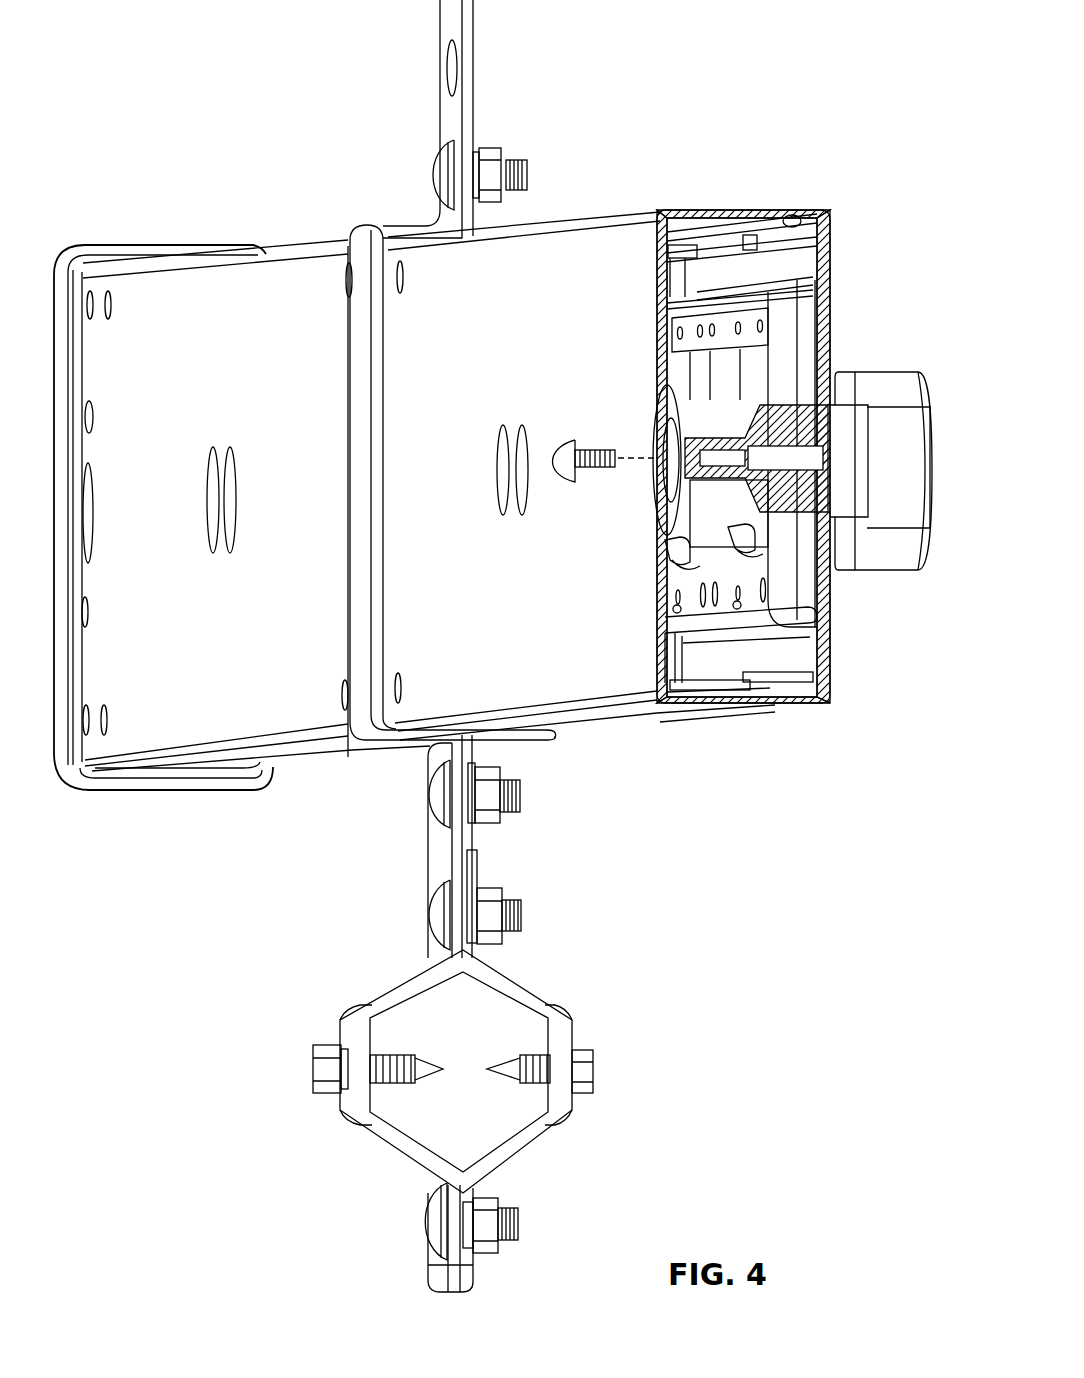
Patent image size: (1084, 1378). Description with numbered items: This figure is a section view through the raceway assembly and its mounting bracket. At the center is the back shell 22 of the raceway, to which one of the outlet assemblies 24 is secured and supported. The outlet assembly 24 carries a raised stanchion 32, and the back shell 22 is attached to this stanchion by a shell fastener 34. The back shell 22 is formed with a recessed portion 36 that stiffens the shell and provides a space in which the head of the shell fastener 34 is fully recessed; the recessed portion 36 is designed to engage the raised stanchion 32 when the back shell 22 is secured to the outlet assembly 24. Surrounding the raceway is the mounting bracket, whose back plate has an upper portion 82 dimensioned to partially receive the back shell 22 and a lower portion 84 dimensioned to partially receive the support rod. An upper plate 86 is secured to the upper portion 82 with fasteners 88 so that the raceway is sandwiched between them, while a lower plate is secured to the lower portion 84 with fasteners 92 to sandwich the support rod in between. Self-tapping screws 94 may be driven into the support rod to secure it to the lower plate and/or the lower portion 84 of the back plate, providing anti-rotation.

The back shell 22 is at (493, 350).
The outlet assembly 24 is at (860, 202).
The raised stanchion 32 is at (714, 432).
The shell fastener 34 is at (584, 446).
The recessed portion 36 is at (702, 482).
The upper portion 82 is at (355, 567).
The lower portion 84 is at (377, 993).
The upper plate 86 is at (540, 742).
The fastener 88 is at (527, 160).
The fastener 92 is at (522, 912).
The self-tapping screw 94 is at (593, 1068).